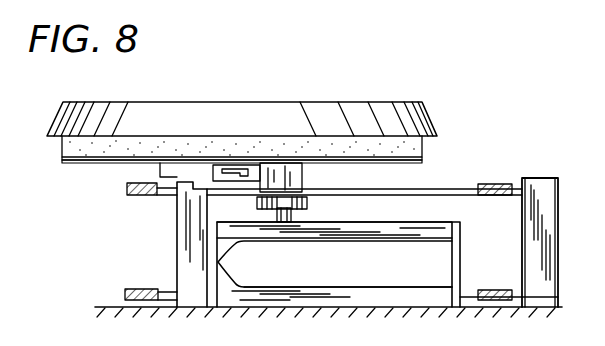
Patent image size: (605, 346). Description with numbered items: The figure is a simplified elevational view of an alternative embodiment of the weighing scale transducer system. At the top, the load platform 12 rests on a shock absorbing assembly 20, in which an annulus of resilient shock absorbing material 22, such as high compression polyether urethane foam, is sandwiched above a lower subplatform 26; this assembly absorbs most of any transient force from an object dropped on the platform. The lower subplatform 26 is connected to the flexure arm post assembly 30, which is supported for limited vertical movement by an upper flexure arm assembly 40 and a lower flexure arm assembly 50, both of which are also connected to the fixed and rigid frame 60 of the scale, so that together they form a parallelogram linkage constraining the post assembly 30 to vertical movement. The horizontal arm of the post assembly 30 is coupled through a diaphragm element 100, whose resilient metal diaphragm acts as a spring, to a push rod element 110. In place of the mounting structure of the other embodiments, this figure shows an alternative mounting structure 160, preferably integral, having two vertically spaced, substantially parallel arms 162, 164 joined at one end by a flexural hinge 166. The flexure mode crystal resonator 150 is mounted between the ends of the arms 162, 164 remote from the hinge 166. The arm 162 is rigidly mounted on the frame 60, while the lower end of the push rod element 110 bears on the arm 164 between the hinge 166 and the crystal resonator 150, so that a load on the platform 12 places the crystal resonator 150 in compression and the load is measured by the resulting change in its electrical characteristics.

The load platform 12 is at (375, 114).
The shock absorbing assembly 20 is at (442, 150).
The resilient shock absorbing material 22 is at (62, 151).
The lower subplatform 26 is at (92, 163).
The flexure arm post assembly 30 is at (176, 246).
The upper flexure arm assembly 40 is at (440, 188).
The lower flexure arm assembly 50 is at (149, 284).
The frame 60 is at (558, 274).
The diaphragm element 100 is at (260, 203).
The push rod element 110 is at (296, 214).
The flexure mode crystal resonator 150 is at (464, 273).
The mounting structure 160 is at (366, 283).
The arm 162 is at (335, 287).
The arm 164 is at (428, 222).
The flexural hinge 166 is at (230, 262).